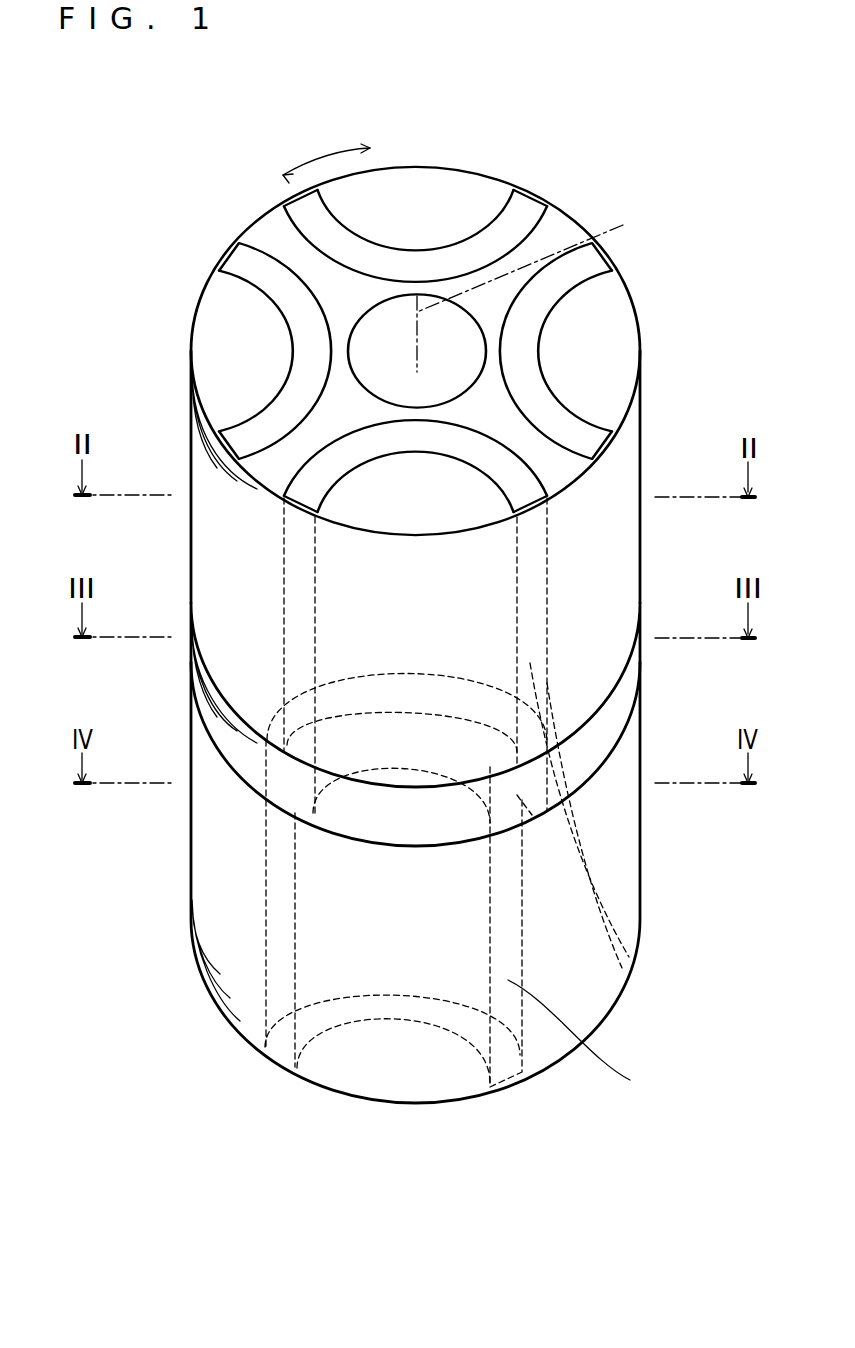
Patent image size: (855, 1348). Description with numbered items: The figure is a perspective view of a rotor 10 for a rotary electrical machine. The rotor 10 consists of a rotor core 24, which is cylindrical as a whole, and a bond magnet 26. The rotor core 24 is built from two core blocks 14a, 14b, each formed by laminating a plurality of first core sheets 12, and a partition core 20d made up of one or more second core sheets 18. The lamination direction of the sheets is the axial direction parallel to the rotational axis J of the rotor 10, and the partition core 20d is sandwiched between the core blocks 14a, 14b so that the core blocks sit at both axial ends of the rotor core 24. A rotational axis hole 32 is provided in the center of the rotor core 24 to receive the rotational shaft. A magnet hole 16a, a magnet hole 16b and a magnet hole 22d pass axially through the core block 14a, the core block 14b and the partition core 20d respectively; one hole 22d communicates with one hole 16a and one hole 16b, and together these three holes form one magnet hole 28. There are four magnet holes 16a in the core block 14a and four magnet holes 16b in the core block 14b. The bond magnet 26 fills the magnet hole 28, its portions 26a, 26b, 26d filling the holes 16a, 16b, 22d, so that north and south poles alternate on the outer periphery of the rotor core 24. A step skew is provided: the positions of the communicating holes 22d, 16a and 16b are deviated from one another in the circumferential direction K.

The rotor 10 is at (222, 160).
The first core sheet 12 is at (207, 445).
The core block 14a is at (650, 436).
The core block 14b is at (655, 862).
The magnet hole 16a is at (568, 303).
The magnet hole 16b is at (343, 1023).
The second core sheet 18 is at (207, 705).
The partition core 20d is at (647, 663).
The magnet hole 22d is at (447, 678).
The rotor core 24 is at (207, 273).
The bond magnet 26 is at (485, 648).
The bond magnet 26a is at (520, 348).
The bond magnet 26b is at (630, 1080).
The bond magnet 26d is at (622, 968).
The magnet hole 28 is at (420, 1030).
The rotational axis hole 32 is at (403, 292).
The rotational axis J is at (526, 289).
The circumferential direction K is at (330, 158).